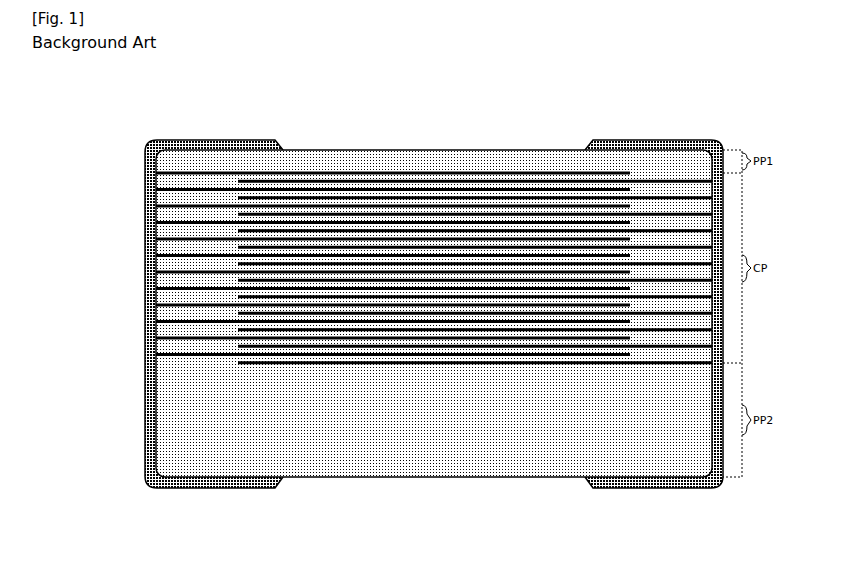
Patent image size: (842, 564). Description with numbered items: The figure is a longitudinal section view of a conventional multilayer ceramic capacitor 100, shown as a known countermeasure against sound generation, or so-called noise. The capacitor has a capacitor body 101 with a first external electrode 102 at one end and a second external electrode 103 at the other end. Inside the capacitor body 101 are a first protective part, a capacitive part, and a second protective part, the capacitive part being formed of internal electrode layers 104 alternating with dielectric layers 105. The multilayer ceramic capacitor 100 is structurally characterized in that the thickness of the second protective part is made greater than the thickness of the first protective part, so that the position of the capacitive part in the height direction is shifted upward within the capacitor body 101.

The multilayer ceramic capacitor 100 is at (418, 290).
The capacitor body 101 is at (415, 150).
The first external electrode 102 is at (210, 140).
The second external electrode 103 is at (655, 140).
The internal electrode layer 104 is at (313, 172).
The dielectric layer 105 is at (352, 177).